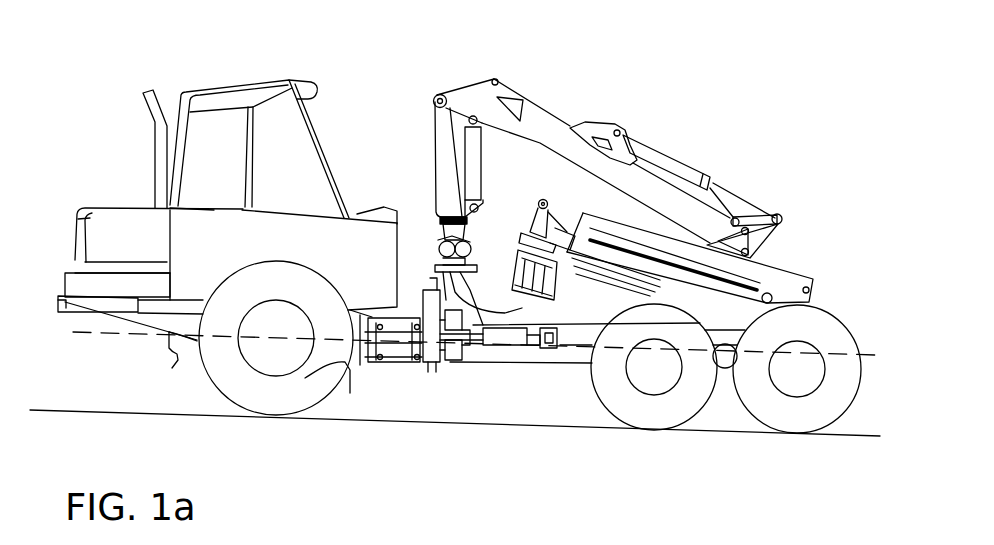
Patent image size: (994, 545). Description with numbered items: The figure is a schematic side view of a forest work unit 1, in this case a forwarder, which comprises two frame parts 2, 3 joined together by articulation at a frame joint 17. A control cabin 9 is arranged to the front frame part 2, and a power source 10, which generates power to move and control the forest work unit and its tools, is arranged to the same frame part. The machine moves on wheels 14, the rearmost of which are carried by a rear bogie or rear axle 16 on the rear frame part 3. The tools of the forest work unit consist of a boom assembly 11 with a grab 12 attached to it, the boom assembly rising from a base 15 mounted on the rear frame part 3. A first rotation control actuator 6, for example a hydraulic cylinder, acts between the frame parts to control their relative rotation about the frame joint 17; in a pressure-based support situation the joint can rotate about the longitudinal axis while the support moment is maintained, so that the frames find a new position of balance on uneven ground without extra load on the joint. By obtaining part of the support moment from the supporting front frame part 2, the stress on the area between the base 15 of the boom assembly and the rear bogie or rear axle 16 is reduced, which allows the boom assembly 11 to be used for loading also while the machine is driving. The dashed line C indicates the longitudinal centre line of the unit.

The forest work unit 1 is at (396, 68).
The frame part 2 is at (177, 320).
The frame part 3 is at (568, 348).
The first rotation control actuator 6 is at (437, 360).
The control cabin 9 is at (313, 141).
The power source 10 is at (118, 240).
The boom assembly 11 is at (560, 125).
The grab 12 is at (520, 310).
The wheels 14 is at (310, 375).
The base of the boom assembly 15 is at (460, 352).
The rear bogie or rear axle 16 is at (720, 360).
The frame joint 17 is at (383, 360).
The longitudinal centre line C is at (872, 355).